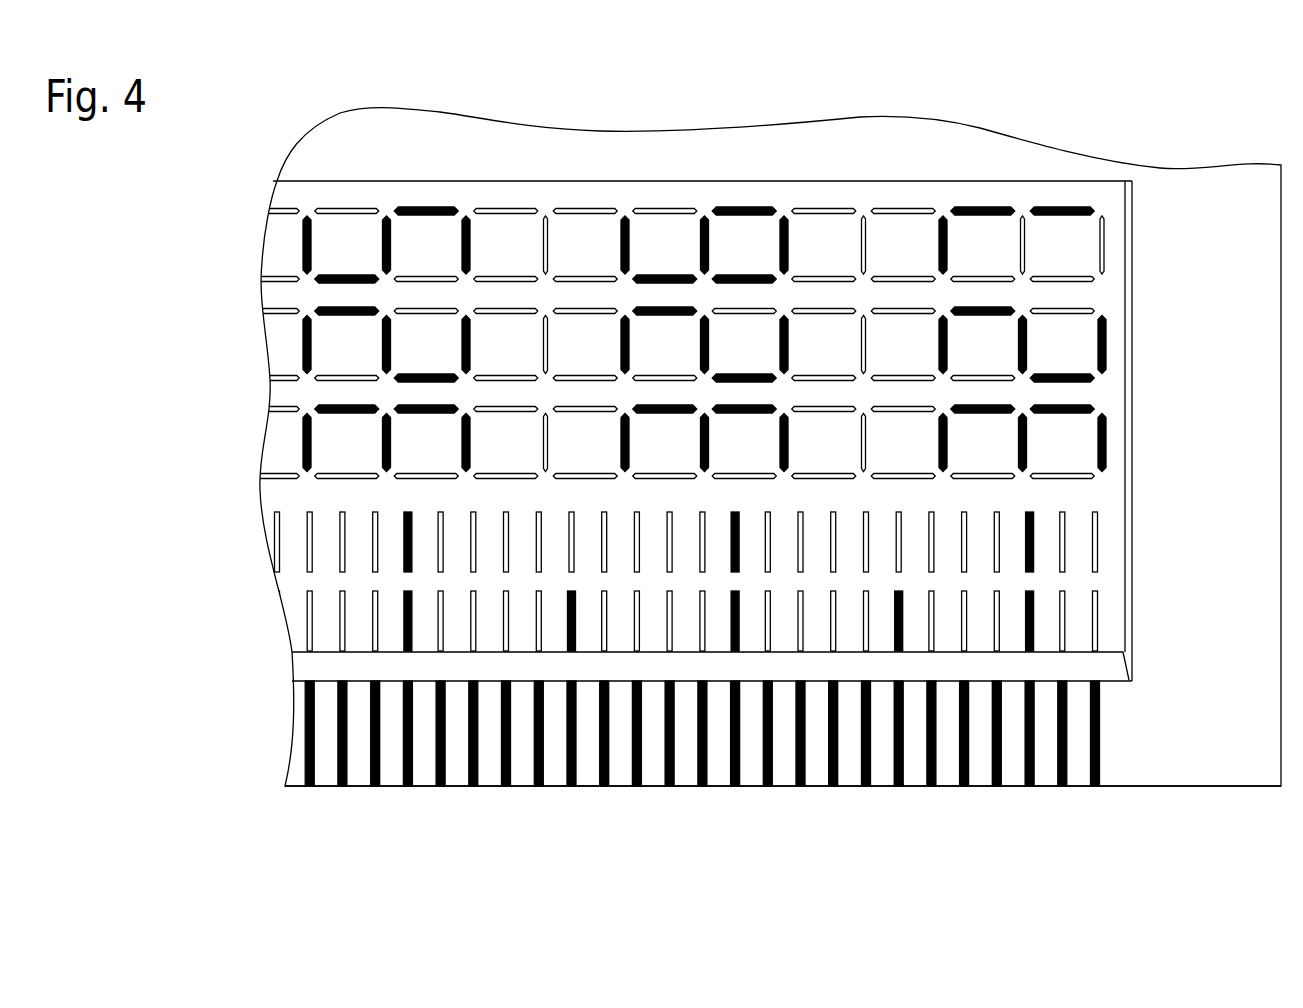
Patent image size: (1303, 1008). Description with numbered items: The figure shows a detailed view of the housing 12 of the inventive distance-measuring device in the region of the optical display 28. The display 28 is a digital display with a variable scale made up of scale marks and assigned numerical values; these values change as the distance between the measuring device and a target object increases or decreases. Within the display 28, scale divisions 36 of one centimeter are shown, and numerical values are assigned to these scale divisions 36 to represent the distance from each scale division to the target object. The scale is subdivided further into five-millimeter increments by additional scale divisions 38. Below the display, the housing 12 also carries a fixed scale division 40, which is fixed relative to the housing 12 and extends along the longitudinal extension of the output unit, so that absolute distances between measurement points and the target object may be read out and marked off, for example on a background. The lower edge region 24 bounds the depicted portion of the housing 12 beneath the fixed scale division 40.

The housing 12 is at (1205, 200).
The circuit board 24 is at (1177, 803).
The optical display 28 is at (665, 243).
The scale division 36 is at (398, 554).
The additional scale division 38 is at (415, 625).
The fixed scale division 40 is at (425, 757).